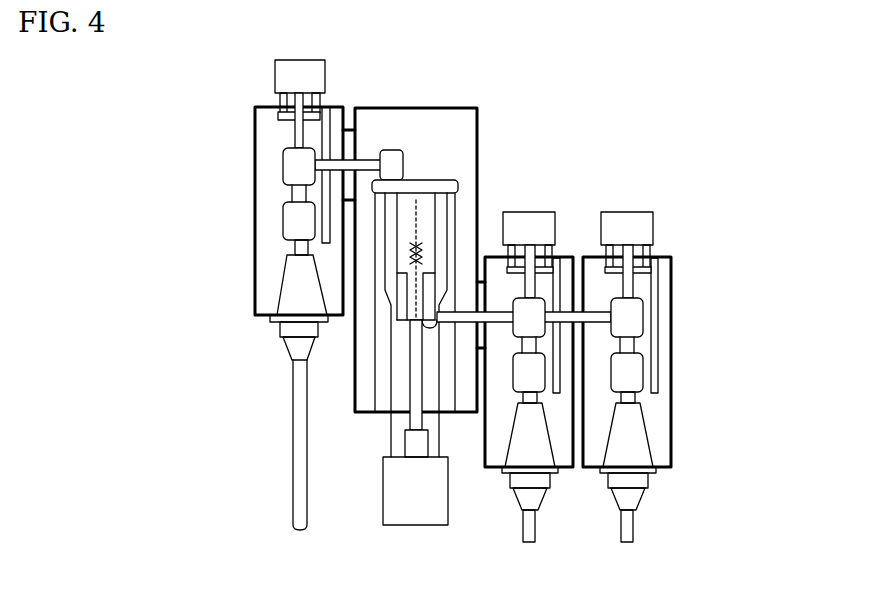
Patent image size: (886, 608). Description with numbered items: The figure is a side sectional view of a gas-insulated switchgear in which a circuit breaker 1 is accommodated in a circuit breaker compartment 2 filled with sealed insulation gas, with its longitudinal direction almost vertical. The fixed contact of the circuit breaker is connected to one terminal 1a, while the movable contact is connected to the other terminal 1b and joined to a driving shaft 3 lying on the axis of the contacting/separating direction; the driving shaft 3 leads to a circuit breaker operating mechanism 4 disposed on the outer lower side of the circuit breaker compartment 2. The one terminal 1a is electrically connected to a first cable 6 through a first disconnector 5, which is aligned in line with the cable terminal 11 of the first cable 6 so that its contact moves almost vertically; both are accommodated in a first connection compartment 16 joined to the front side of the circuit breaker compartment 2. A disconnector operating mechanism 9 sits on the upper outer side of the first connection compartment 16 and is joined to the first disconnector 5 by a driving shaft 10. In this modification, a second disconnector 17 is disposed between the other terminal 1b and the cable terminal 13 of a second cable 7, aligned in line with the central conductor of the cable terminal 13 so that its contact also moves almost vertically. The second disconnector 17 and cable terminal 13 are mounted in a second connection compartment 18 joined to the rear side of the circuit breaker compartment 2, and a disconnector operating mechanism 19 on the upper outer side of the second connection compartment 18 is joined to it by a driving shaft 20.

The circuit breaker 1 is at (450, 307).
The one terminal 1a is at (422, 115).
The other terminal 1b is at (373, 356).
The circuit breaker compartment 2 is at (442, 231).
The driving shaft 3 is at (374, 401).
The circuit breaker operating mechanism 4 is at (385, 514).
The first disconnector 5 is at (287, 188).
The first cable 6 is at (259, 422).
The second cable 7 is at (598, 518).
The disconnector operating mechanism 9 is at (257, 82).
The driving shaft 10 is at (248, 120).
The cable terminal 11 is at (251, 277).
The cable terminal 13 is at (633, 460).
The first connection compartment 16 is at (265, 211).
The second disconnector 17 is at (599, 247).
The second connection compartment 18 is at (609, 413).
The disconnector operating mechanism 19 is at (632, 227).
The driving shaft 20 is at (637, 312).